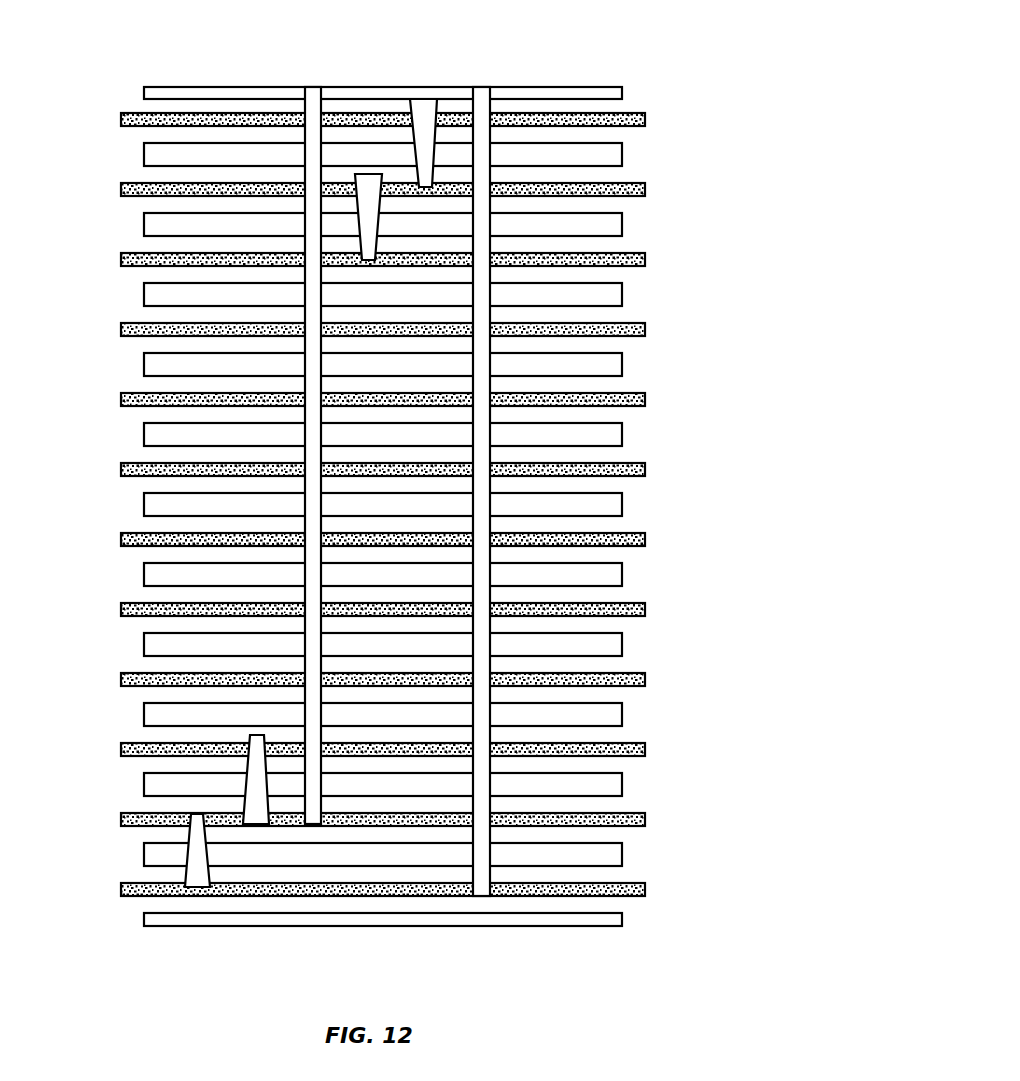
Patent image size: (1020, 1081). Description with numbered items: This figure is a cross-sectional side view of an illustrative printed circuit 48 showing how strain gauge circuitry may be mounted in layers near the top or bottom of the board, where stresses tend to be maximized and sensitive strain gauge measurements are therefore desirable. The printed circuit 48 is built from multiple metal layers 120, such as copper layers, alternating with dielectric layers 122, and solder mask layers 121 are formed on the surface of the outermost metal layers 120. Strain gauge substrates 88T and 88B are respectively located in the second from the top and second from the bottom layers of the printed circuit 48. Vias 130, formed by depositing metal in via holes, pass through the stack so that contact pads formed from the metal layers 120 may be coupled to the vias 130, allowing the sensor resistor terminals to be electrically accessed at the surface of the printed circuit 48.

The printed circuit 48 is at (764, 126).
The solder mask layers 121 is at (616, 95).
The metal layers 120 is at (381, 499).
The dielectric layers 122 is at (616, 157).
The vias 130 is at (372, 203).
The strain gauge substrate 88T is at (122, 189).
The strain gauge substrate 88B is at (122, 819).